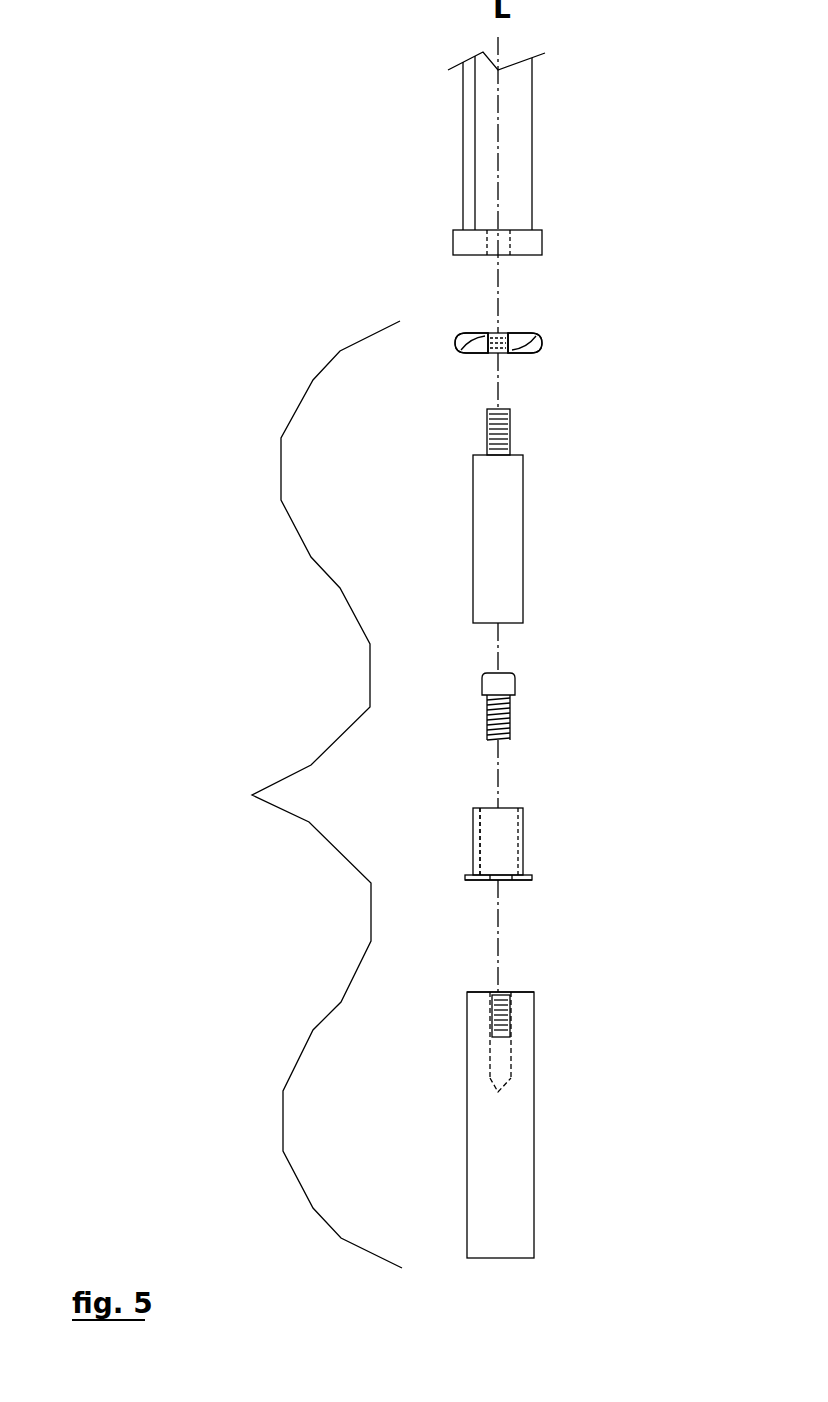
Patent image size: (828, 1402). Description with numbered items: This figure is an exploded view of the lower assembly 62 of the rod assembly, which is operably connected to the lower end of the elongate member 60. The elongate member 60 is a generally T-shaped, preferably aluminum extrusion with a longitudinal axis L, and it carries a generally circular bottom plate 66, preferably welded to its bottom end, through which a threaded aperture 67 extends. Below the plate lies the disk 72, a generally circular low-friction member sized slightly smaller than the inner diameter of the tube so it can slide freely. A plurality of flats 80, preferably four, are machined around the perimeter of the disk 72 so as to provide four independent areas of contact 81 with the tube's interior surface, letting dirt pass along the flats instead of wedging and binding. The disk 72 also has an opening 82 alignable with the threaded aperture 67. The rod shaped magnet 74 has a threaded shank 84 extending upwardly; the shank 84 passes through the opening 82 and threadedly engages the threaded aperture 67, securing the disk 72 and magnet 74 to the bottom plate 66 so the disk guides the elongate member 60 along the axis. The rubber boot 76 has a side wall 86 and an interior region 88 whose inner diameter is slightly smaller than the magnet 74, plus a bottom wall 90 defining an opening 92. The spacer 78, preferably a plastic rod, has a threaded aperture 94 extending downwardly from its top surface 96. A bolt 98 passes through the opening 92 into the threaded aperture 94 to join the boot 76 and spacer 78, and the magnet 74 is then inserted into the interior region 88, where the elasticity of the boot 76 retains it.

The elongate member 60 is at (467, 138).
The bottom plate 66 is at (532, 242).
The threaded aperture 67 is at (493, 248).
The disk 72 is at (543, 343).
The flats 80 is at (523, 342).
The areas of contact 81 is at (490, 343).
The opening 82 is at (503, 352).
The threaded shank 84 is at (510, 437).
The rod shaped magnet 74 is at (523, 538).
The bolt 98 is at (513, 715).
The rubber boot 76 is at (528, 848).
The side wall 86 is at (525, 827).
The interior region 88 is at (452, 833).
The bottom wall 90 is at (522, 878).
The opening 92 is at (507, 878).
The top surface 96 is at (470, 969).
The threaded aperture 94 is at (512, 1028).
The spacer 78 is at (543, 1140).
The lower assembly 62 is at (303, 794).